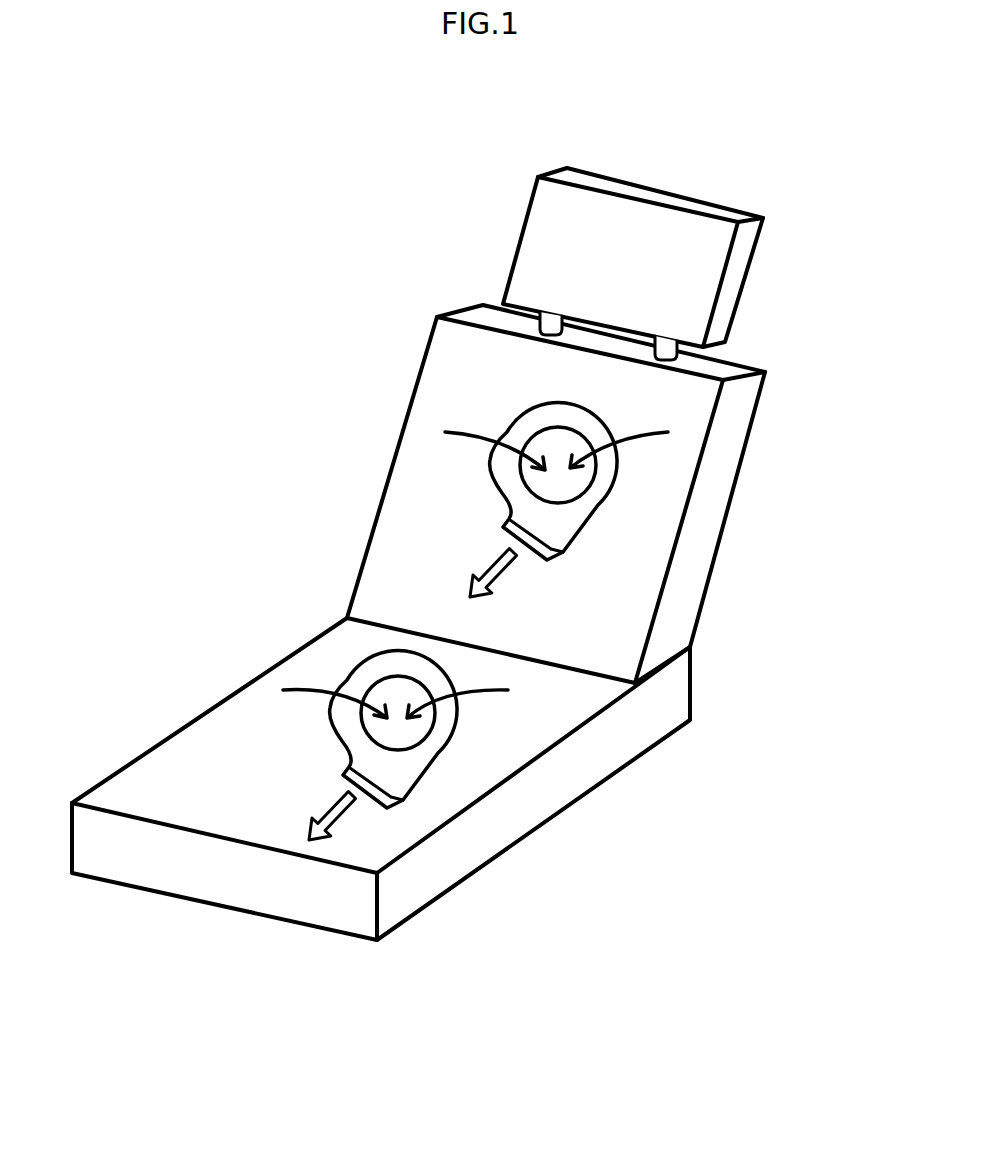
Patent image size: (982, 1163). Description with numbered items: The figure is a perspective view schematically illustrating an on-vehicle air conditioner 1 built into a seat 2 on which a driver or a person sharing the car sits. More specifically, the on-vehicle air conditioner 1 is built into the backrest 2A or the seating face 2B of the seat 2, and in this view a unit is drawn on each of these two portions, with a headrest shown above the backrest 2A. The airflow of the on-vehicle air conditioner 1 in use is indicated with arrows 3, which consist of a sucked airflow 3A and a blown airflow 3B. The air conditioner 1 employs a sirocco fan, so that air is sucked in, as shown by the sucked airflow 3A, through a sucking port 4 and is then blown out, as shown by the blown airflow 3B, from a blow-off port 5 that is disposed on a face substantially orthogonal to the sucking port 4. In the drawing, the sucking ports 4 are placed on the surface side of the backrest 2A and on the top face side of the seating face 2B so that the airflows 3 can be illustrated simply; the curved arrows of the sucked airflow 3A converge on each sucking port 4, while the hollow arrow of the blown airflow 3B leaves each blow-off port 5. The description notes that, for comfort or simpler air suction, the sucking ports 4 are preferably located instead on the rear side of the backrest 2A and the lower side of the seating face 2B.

The on-vehicle air conditioner 1 is at (558, 523).
The seat 2 is at (258, 458).
The backrest 2A is at (410, 532).
The seating face 2B is at (353, 645).
The arrows 3 is at (570, 883).
The sucked airflow 3A is at (623, 435).
The blown airflow 3B is at (490, 588).
The sucking port 4 is at (572, 485).
The blow-off port 5 is at (543, 552).